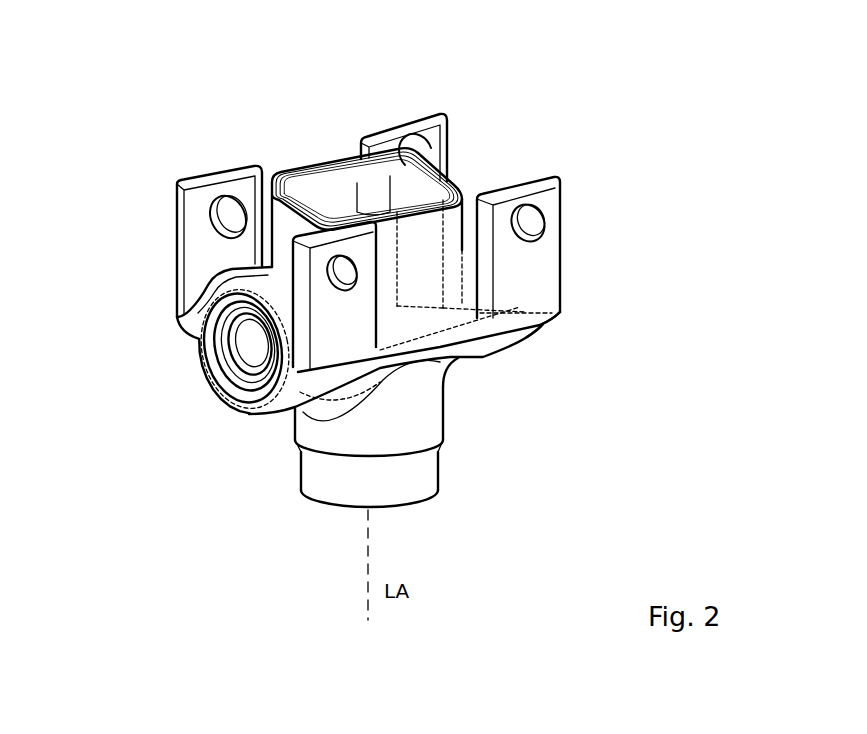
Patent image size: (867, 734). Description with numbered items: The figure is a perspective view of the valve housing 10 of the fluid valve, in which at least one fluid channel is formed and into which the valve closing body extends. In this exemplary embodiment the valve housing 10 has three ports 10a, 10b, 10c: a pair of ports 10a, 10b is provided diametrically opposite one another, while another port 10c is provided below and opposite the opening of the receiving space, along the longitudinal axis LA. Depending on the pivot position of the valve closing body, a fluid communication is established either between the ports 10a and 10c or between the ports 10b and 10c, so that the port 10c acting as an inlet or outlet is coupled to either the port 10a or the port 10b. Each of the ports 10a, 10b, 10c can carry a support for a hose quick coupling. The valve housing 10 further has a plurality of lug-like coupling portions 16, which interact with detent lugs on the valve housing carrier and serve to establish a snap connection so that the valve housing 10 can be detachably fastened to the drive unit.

The valve housing 10 is at (571, 102).
The port 10a is at (208, 378).
The port 10b is at (561, 340).
The port 10c is at (430, 519).
The lug-like coupling portion 16 is at (400, 115).